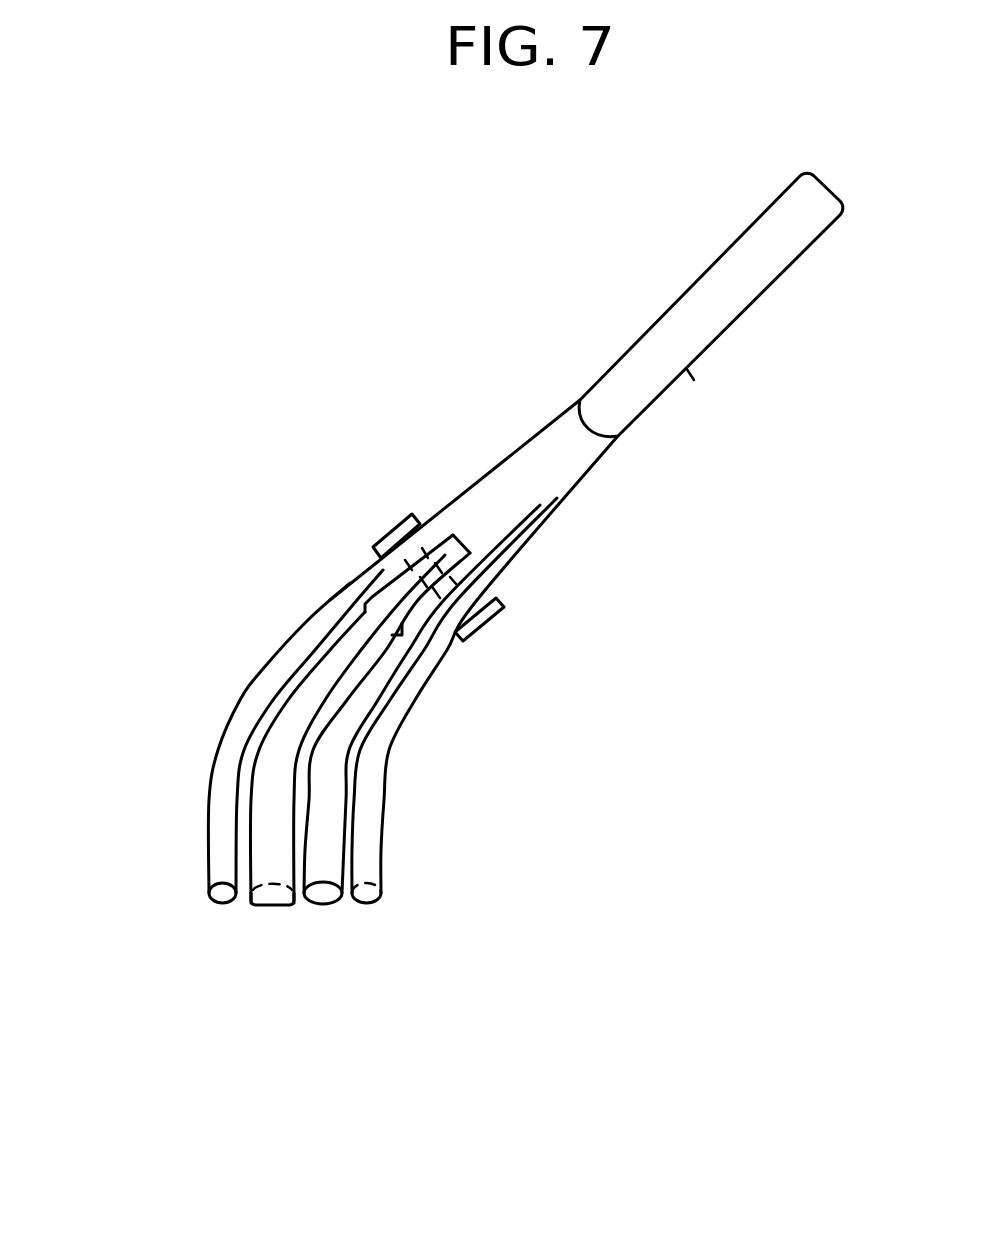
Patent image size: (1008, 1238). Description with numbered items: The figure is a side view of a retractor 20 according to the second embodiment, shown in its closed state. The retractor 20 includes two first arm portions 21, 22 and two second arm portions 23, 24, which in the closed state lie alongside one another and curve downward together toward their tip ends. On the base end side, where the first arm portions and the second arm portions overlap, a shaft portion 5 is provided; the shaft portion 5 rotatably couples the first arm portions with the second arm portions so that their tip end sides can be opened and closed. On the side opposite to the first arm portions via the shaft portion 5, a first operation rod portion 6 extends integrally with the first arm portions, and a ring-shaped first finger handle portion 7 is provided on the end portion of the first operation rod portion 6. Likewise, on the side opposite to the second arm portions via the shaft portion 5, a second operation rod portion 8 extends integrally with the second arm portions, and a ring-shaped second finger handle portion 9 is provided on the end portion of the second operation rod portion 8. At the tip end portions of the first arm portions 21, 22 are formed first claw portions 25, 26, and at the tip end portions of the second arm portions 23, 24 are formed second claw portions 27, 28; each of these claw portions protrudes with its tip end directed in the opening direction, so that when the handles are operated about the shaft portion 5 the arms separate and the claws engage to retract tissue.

The shaft portion 5 is at (386, 537).
The first operation rod portion 6 is at (496, 466).
The first finger handle portion 7 is at (674, 297).
The second operation rod portion 8 is at (527, 543).
The second finger handle portion 9 is at (700, 390).
The retractor 20 is at (270, 470).
The first arm portion 21 is at (287, 645).
The first arm portion 22 is at (323, 828).
The second arm portion 23 is at (274, 740).
The second arm portion 24 is at (390, 767).
The first claw portion 25 is at (223, 905).
The first claw portion 26 is at (323, 905).
The second claw portion 27 is at (268, 905).
The second claw portion 28 is at (371, 905).